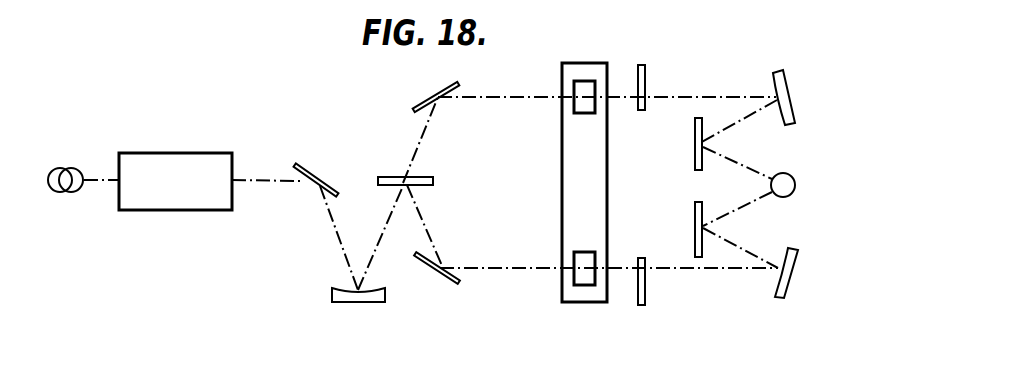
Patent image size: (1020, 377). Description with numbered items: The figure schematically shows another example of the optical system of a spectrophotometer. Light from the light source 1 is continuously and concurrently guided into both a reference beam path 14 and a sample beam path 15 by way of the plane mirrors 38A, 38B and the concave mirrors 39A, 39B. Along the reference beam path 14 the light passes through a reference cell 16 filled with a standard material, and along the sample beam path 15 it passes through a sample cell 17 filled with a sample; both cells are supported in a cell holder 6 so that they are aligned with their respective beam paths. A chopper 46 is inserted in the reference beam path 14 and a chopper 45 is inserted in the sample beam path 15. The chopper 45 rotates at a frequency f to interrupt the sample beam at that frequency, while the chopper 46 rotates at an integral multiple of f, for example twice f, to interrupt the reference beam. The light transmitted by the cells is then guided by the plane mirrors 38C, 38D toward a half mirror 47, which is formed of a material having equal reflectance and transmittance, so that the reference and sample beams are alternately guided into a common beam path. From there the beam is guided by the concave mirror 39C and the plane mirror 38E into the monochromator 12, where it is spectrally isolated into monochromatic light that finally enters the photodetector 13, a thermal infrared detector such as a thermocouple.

The photodetector 13 is at (75, 168).
The monochromator 12 is at (200, 153).
The plane mirror 38E is at (312, 167).
The concave mirror 39C is at (333, 290).
The plane mirror 38C is at (463, 85).
The half mirror 47 is at (433, 181).
The plane mirror 38D is at (458, 282).
The cell holder 6 is at (562, 197).
The reference cell 16 is at (573, 105).
The sample cell 17 is at (575, 263).
The chopper 46 is at (647, 87).
The chopper 45 is at (647, 281).
The plane mirror 38A is at (695, 127).
The plane mirror 38B is at (695, 218).
The reference beam path 14 is at (705, 97).
The sample beam path 15 is at (697, 272).
The concave mirror 39A is at (788, 80).
The concave mirror 39B is at (787, 296).
The light source 1 is at (792, 178).